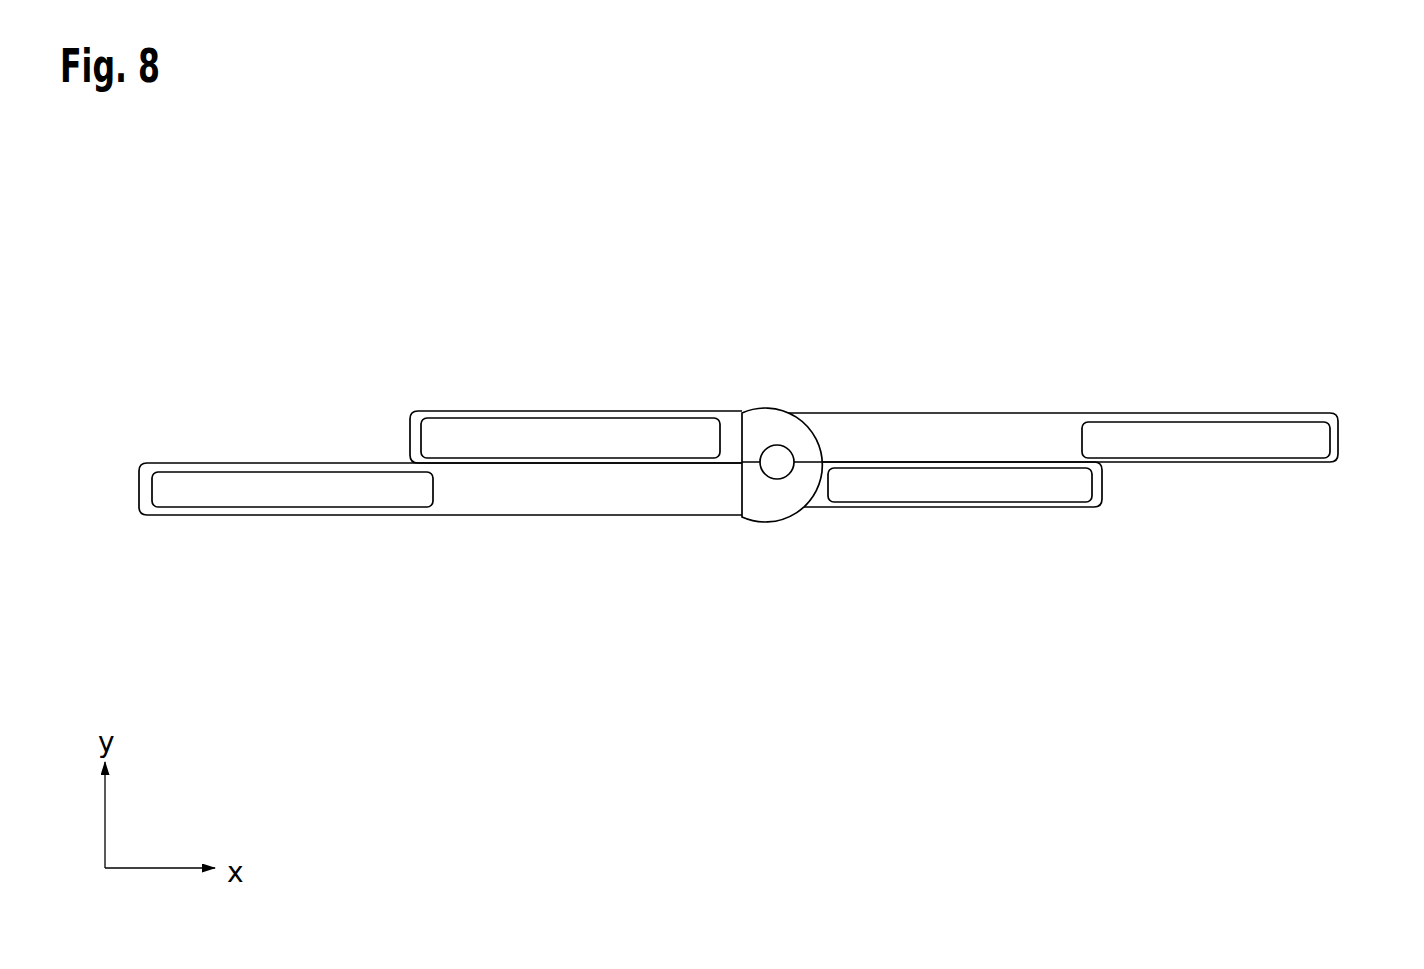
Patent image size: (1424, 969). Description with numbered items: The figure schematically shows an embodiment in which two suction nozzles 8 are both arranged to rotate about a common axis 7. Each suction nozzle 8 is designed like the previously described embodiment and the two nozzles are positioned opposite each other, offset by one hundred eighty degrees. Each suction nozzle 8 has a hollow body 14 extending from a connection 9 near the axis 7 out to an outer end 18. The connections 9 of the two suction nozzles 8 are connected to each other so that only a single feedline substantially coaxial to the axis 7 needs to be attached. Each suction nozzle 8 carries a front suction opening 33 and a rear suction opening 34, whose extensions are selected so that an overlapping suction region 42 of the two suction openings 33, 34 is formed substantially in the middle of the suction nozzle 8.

The suction nozzle 8 is at (741, 450).
The outer end 18 is at (741, 400).
The front suction opening 33 is at (275, 507).
The rear suction opening 34 is at (522, 412).
The hollow body 14 is at (410, 413).
The overlapping suction region 42 is at (1067, 413).
The connection 9 is at (770, 418).
The axis 7 is at (777, 479).